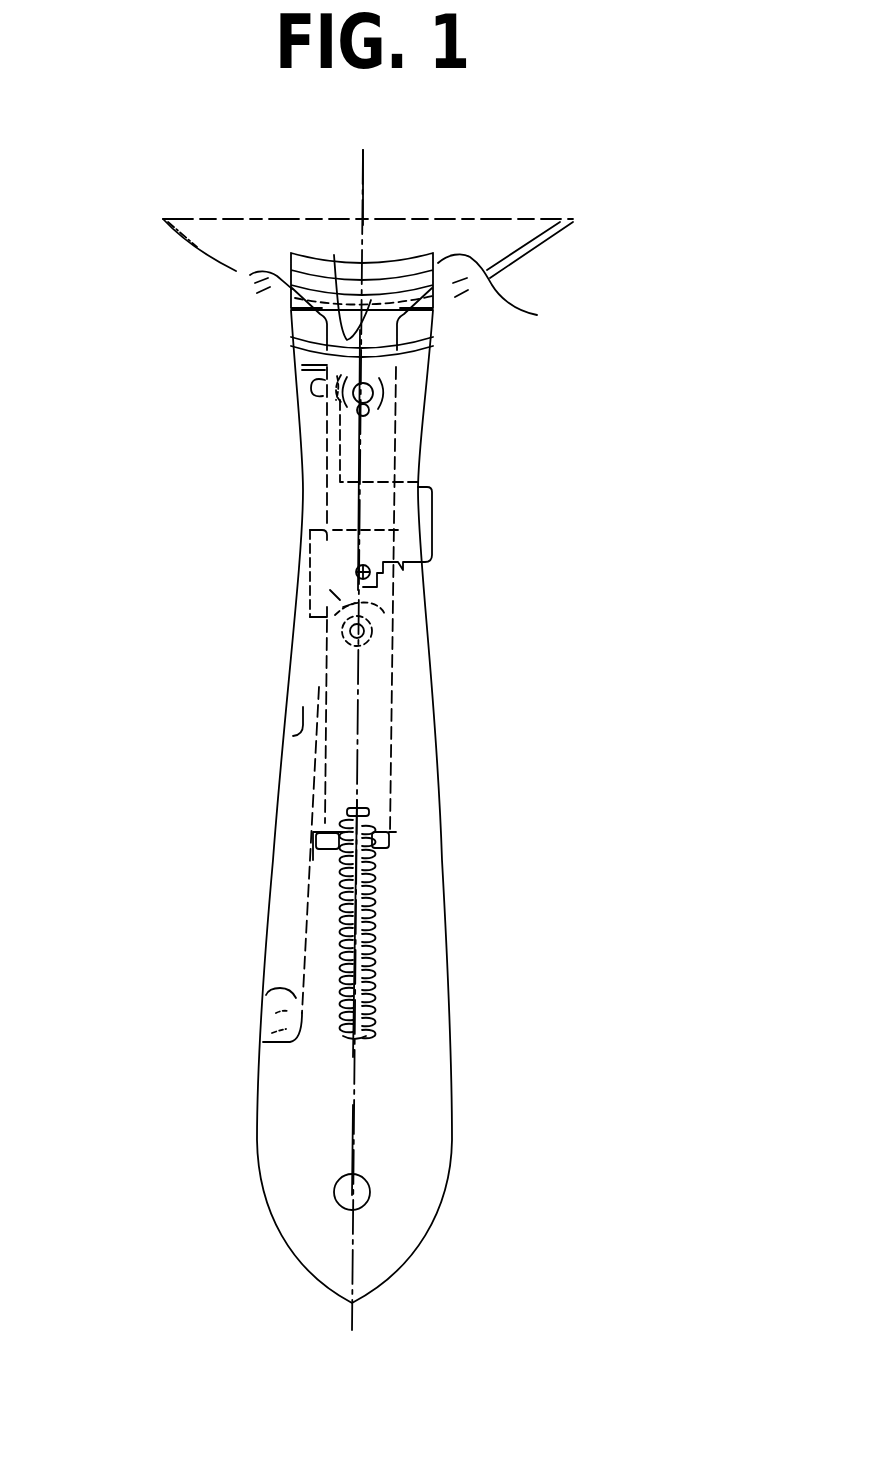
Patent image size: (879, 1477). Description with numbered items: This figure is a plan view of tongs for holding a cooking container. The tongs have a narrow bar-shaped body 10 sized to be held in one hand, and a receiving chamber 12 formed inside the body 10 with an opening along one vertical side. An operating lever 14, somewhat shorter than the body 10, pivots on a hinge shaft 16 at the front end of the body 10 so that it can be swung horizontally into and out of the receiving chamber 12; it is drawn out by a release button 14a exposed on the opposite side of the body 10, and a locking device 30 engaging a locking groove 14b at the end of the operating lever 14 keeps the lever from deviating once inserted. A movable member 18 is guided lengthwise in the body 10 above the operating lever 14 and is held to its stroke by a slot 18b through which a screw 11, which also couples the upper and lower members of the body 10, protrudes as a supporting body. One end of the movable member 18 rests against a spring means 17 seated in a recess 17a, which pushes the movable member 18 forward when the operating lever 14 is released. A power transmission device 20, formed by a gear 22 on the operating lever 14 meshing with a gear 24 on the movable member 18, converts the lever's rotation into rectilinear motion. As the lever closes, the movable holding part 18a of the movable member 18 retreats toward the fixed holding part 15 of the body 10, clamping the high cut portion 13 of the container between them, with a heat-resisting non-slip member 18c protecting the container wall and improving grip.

The body 10 is at (452, 640).
The screw 11 is at (377, 384).
The receiving chamber 12 is at (325, 823).
The high cut portion 13 is at (200, 262).
The operating lever 14 is at (293, 736).
The release button 14a is at (425, 520).
The locking groove 14b is at (273, 1003).
The fixed holding part 15 is at (250, 275).
The hinge shaft 16 is at (303, 393).
The spring means 17 is at (375, 918).
The recess 17a is at (373, 992).
The movable member 18 is at (392, 750).
The movable holding part 18a is at (513, 278).
The slot 18b is at (378, 407).
The non-slip member 18c is at (334, 255).
The power transmission device 20 is at (331, 632).
The gear 22 is at (340, 547).
The gear 24 is at (335, 657).
The locking device 30 is at (278, 1007).